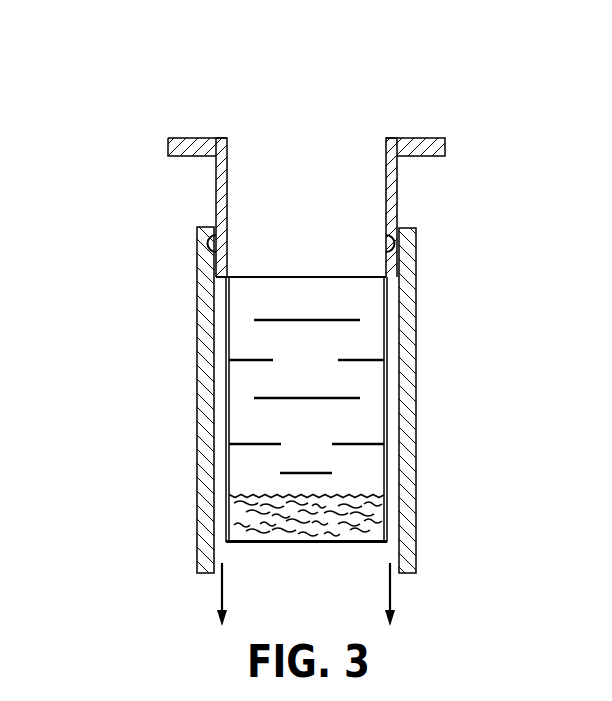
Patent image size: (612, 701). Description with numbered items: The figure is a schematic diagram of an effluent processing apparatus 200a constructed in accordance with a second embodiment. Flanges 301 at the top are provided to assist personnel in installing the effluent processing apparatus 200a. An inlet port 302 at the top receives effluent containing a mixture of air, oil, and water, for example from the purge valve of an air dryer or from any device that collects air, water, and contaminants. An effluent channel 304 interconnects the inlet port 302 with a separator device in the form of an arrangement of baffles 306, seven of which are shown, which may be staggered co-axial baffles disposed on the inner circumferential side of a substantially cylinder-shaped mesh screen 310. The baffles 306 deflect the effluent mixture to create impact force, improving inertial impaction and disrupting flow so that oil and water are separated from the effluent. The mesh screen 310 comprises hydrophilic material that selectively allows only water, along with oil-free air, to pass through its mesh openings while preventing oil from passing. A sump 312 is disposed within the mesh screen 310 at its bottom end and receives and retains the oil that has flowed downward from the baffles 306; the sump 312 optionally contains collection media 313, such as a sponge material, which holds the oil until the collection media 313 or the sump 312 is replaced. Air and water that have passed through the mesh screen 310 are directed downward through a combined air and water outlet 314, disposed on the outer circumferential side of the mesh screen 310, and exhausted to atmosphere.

The effluent processing apparatus 200a is at (302, 95).
The flanges 301 is at (169, 143).
The inlet port 302 is at (346, 139).
The effluent channel 304 is at (330, 223).
The baffles 306 is at (243, 360).
The mesh screen 310 is at (388, 323).
The sump 312 is at (330, 544).
The collection media 313 is at (363, 512).
The combined air and water outlet 314 is at (221, 545).